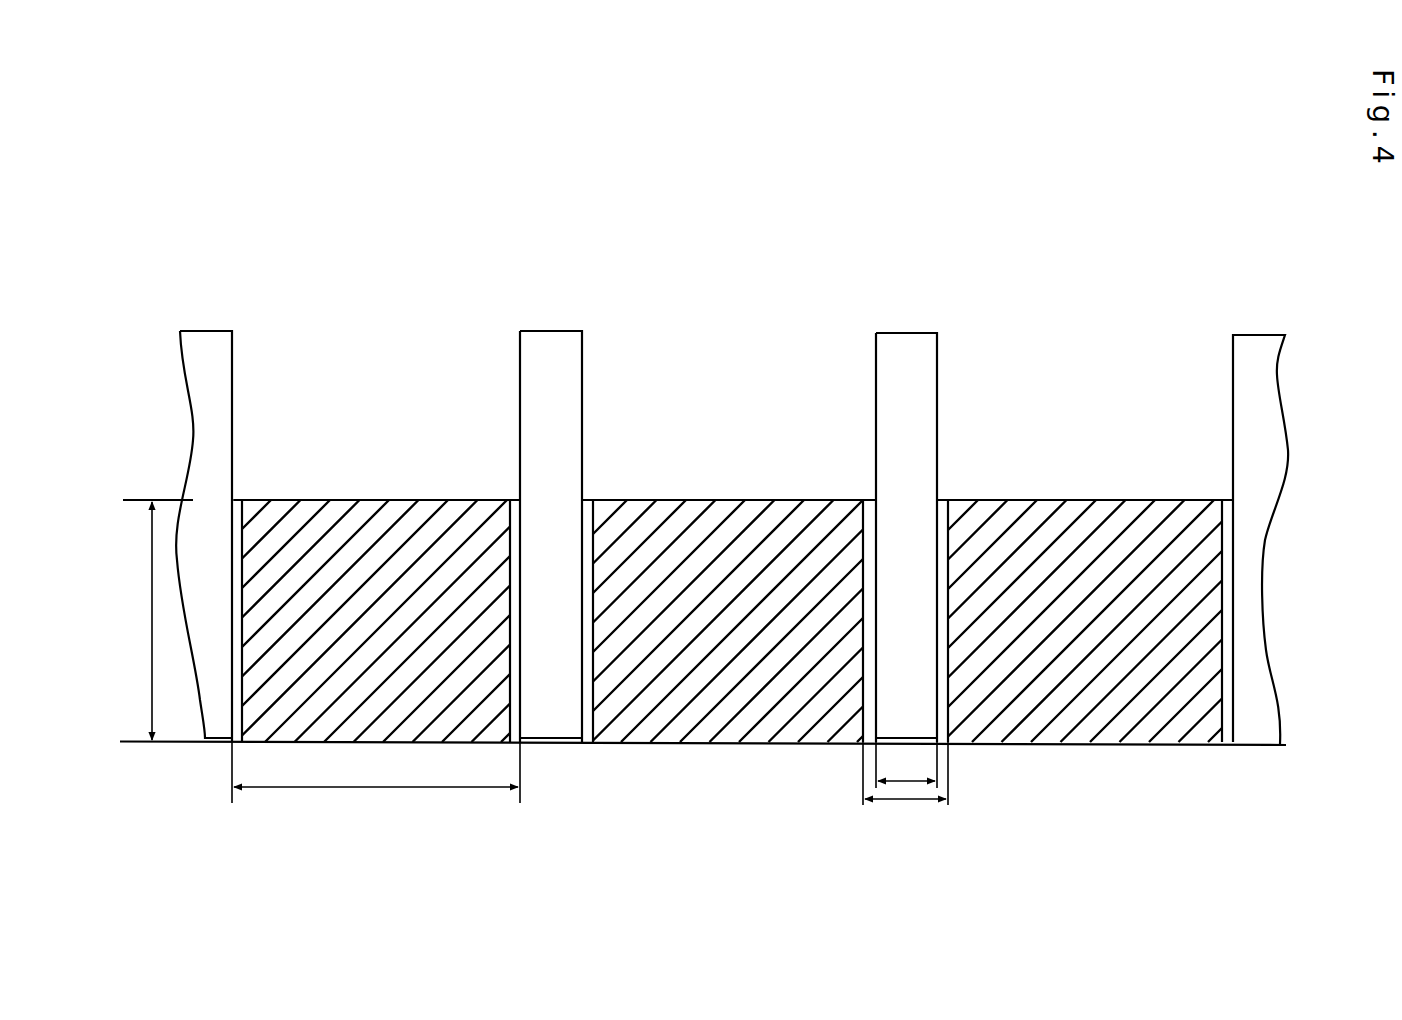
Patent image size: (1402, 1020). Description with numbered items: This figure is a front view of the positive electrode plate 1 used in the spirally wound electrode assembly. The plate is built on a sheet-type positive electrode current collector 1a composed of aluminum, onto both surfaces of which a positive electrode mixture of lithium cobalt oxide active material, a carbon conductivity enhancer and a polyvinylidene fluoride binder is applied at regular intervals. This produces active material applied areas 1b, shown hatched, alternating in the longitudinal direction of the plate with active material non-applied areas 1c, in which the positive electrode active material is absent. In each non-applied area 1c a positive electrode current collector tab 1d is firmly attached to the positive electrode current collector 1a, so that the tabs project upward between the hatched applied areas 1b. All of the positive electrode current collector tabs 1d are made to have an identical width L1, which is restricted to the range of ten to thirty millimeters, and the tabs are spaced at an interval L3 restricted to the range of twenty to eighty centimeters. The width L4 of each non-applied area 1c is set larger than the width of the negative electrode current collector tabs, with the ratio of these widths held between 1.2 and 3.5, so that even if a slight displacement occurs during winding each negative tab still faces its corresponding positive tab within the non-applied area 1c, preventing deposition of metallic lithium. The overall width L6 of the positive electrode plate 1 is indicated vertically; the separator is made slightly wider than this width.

The positive electrode plate 1 is at (1313, 408).
The positive electrode current collector 1a is at (552, 743).
The active material applied area 1b is at (343, 500).
The active material non-applied area 1c is at (238, 500).
The positive electrode current collector tab 1d is at (234, 371).
The width of the positive electrode current collector tabs L1 is at (906, 765).
The interval of the current collector tabs L3 is at (376, 772).
The width of the non-applied area L4 is at (905, 786).
The width of the positive electrode plate L6 is at (152, 608).